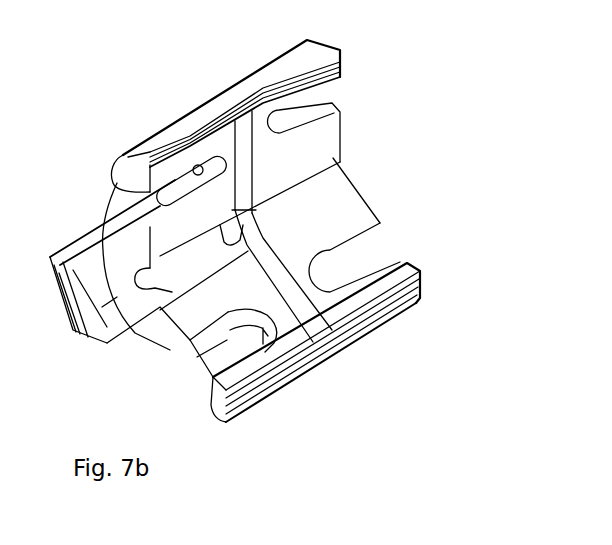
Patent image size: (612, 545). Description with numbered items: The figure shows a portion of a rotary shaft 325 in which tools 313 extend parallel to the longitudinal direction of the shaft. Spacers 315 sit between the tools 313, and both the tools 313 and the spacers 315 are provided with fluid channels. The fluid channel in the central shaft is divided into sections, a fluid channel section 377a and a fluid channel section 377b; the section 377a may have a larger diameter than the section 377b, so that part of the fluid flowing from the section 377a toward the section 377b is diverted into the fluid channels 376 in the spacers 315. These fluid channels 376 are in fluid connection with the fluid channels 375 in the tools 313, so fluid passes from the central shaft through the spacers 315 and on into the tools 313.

The tool 313 is at (172, 137).
The spacer 315 is at (257, 320).
The rotary shaft 325 is at (366, 110).
The fluid channel 375 is at (82, 323).
The fluid channel 376 is at (287, 277).
The fluid channel section 377a is at (160, 285).
The fluid channel section 377b is at (320, 183).